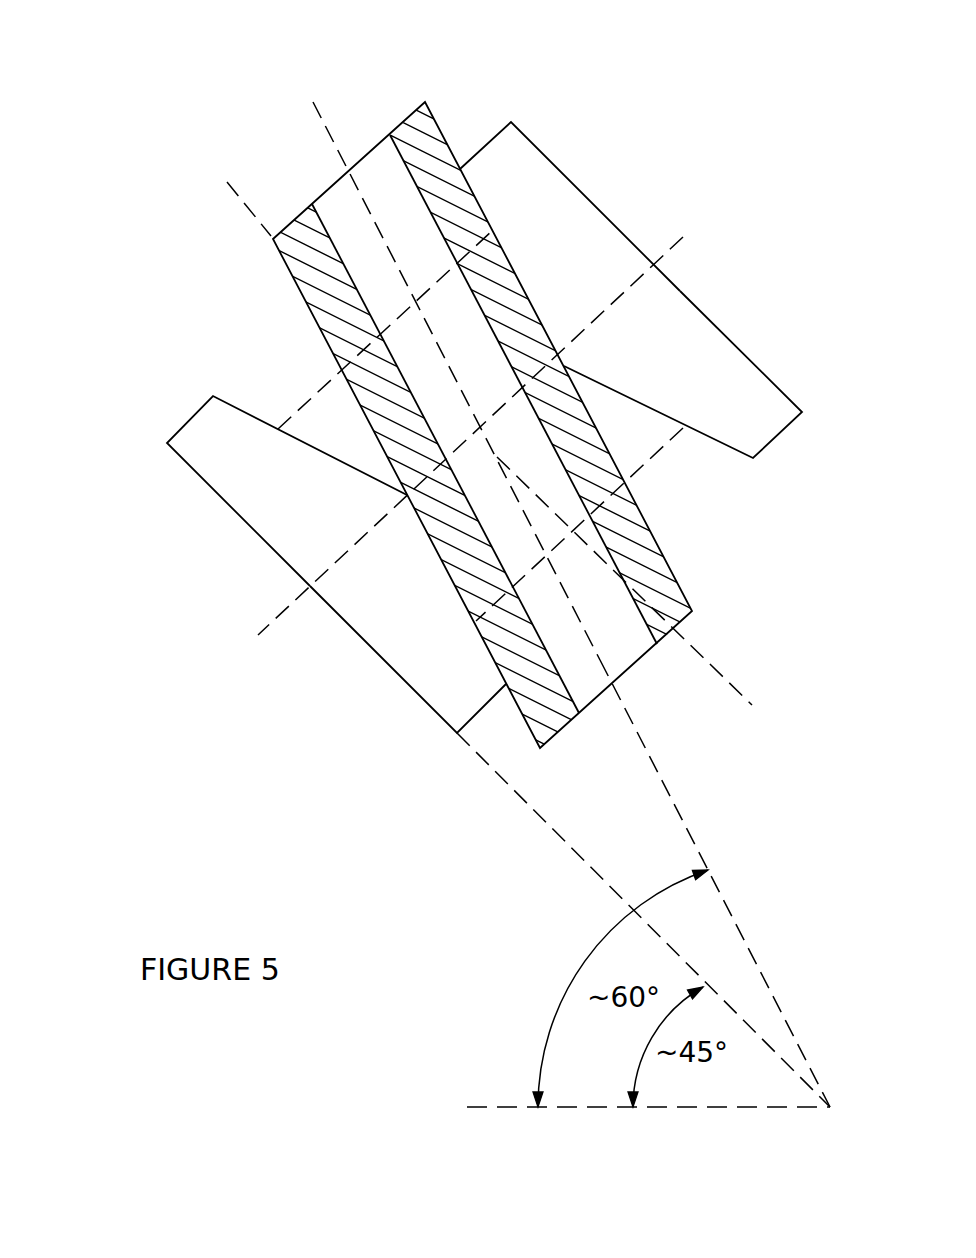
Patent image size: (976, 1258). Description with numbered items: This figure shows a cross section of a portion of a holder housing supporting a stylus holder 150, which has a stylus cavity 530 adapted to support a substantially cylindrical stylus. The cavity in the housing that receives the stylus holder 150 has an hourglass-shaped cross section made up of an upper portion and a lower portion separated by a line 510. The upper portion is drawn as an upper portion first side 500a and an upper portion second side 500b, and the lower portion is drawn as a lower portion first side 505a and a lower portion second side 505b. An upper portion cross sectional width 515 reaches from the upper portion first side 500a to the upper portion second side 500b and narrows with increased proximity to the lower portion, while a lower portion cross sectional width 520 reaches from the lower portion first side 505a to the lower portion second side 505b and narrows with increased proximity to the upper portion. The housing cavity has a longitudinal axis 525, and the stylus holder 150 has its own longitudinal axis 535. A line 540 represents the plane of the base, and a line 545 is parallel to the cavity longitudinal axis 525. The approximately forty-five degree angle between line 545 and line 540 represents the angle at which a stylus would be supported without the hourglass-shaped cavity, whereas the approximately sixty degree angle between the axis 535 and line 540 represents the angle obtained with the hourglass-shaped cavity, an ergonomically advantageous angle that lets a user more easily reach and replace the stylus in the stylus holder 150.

The stylus holder 150 is at (312, 136).
The stylus cavity 530 is at (415, 89).
The upper portion first side 500a is at (526, 105).
The lower portion first side 505a is at (676, 255).
The line 510 is at (543, 424).
The upper portion cross sectional width 515 is at (312, 397).
The lower portion cross sectional width 520 is at (647, 460).
The longitudinal axis 525 is at (725, 665).
The upper portion second side 500b is at (287, 608).
The lower portion second side 505b is at (442, 763).
The longitudinal axis 535 is at (680, 800).
The line 545 is at (560, 845).
The line 540 is at (495, 1105).